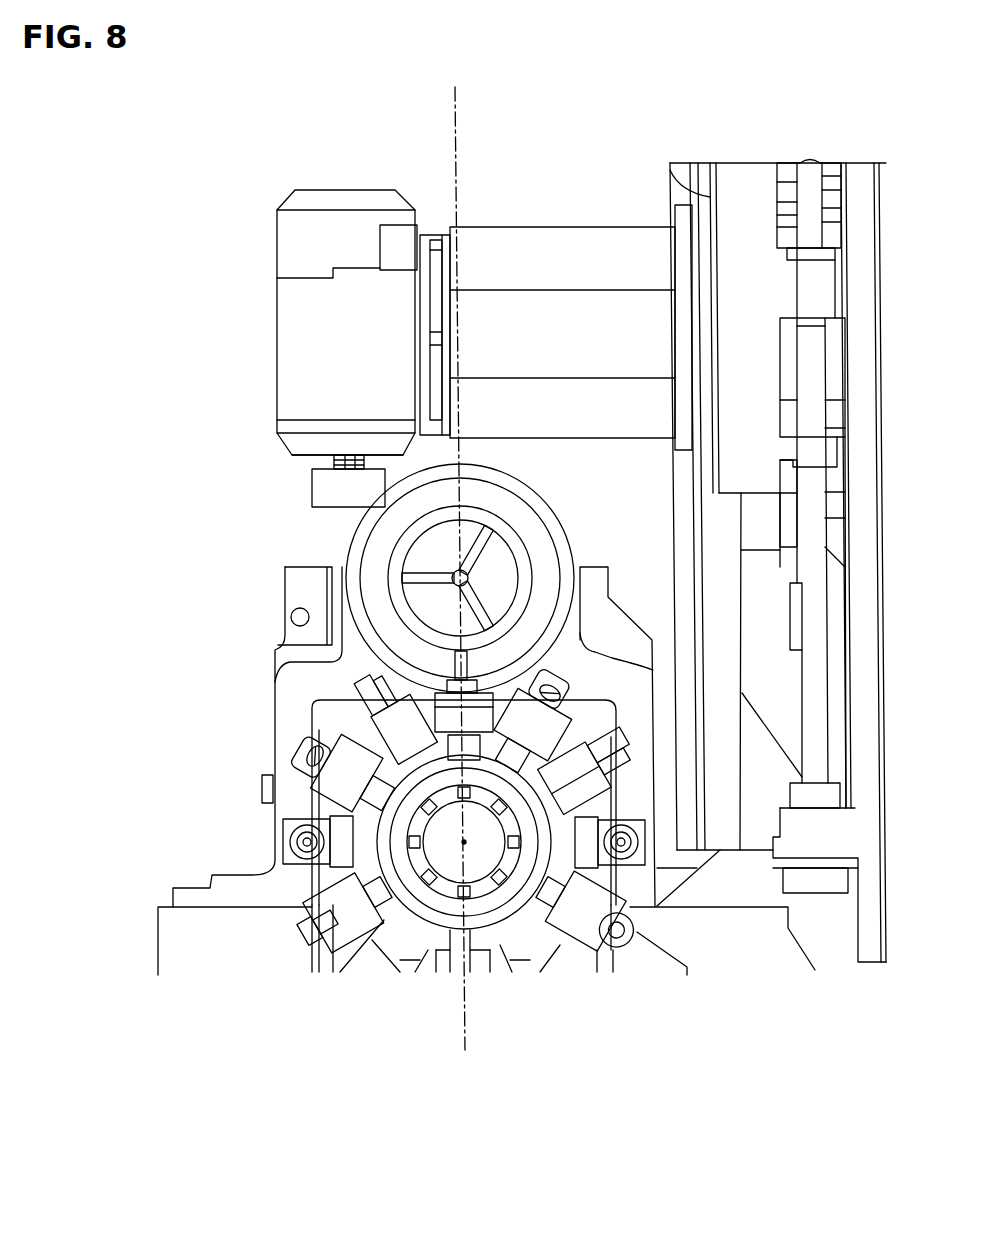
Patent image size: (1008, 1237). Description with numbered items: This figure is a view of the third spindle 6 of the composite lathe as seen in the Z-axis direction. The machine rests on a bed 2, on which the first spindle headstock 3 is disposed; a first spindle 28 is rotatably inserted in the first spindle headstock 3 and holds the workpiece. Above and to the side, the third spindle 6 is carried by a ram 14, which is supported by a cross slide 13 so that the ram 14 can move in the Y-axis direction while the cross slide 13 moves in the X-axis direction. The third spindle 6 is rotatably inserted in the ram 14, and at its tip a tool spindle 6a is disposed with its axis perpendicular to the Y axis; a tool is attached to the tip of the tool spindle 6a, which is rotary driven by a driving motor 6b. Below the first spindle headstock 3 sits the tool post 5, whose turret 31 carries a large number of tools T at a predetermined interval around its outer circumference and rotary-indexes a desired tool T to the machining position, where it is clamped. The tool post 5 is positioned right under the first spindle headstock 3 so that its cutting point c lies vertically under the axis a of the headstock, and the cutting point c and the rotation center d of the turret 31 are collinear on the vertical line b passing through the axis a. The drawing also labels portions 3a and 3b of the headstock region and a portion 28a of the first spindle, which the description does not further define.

The bed 2 is at (158, 935).
The first spindle headstock 3 is at (285, 598).
The housing side portion 3a is at (267, 745).
The housing boss 3b is at (548, 500).
The tool post 5 is at (352, 958).
The third spindle 6 is at (277, 278).
The tool spindle 6a is at (330, 460).
The driving motor 6b is at (277, 383).
The cross slide 13 is at (690, 183).
The ram 14 is at (590, 227).
The first spindle 28 is at (488, 492).
The wheel inner ring 28a is at (510, 600).
The turret 31 is at (306, 788).
The tool T is at (313, 492).
The axis a is at (513, 573).
The vertical line b is at (455, 130).
The cutting point c is at (555, 648).
The rotation center d is at (464, 842).